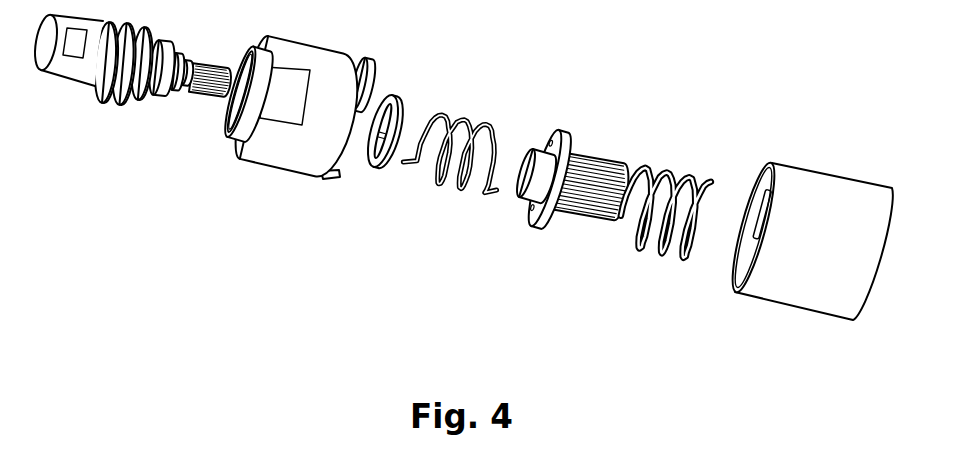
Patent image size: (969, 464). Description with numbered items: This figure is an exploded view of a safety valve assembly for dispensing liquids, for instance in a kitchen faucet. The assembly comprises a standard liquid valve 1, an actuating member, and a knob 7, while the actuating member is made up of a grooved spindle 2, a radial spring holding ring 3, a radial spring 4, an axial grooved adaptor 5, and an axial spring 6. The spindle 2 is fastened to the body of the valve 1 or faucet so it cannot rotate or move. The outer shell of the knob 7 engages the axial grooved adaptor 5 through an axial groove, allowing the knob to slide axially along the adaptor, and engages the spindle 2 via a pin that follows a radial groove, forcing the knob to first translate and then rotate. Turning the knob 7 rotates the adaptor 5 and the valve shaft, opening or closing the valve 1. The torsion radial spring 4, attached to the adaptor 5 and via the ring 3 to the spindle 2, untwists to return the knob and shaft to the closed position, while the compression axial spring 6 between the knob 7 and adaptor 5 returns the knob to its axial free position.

The valve 1 is at (80, 70).
The grooved spindle 2 is at (280, 155).
The radial spring holding ring 3 is at (380, 164).
The radial spring 4 is at (460, 185).
The axial grooved adaptor 5 is at (547, 202).
The axial spring 6 is at (653, 252).
The knob 7 is at (774, 278).